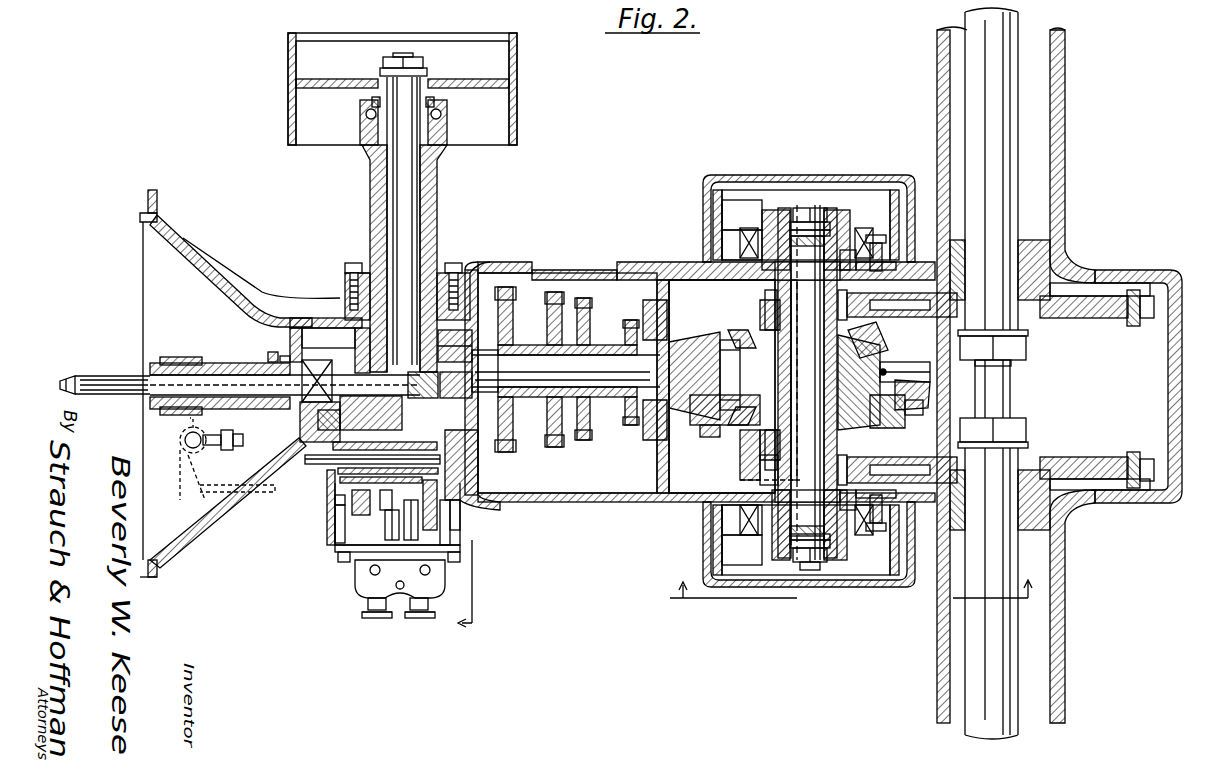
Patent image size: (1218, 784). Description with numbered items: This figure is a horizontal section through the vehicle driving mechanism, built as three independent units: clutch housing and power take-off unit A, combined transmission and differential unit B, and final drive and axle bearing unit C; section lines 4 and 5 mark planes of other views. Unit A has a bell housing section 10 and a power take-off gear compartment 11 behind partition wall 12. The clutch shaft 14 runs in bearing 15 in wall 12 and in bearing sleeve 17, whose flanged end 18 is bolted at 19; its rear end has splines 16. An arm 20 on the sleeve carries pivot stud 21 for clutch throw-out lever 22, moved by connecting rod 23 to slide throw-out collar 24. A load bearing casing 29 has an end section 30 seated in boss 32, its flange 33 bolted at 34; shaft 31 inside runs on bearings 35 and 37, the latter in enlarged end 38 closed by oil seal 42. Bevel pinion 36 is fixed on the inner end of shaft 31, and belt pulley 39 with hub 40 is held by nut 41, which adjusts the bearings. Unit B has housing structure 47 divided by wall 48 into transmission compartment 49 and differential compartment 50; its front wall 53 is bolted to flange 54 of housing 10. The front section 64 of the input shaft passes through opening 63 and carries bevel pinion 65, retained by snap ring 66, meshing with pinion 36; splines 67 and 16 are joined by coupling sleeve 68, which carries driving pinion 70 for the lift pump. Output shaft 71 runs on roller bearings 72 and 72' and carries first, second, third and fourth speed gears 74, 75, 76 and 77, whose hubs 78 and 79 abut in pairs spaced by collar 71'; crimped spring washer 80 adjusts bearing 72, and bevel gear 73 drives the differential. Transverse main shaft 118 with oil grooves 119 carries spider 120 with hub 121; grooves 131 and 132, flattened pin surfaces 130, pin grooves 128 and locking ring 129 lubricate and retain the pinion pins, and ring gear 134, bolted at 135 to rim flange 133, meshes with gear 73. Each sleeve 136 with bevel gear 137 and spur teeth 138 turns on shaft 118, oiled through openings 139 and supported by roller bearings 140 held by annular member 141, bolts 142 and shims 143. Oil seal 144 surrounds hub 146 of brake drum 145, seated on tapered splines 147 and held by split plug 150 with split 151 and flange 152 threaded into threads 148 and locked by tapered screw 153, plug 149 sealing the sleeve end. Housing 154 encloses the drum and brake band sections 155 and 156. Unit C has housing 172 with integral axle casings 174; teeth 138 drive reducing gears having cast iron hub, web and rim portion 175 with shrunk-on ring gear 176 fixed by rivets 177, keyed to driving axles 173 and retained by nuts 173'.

The clutch housing and power take-off unit A is at (248, 284).
The combined transmission and differential unit B is at (652, 255).
The final drive or speed reduction and axle bearing unit C is at (1084, 268).
The section line 4 is at (848, 598).
The section line 5 / control shaft 5 is at (407, 252).
The bell housing section 10 is at (165, 522).
The rear power take-off gear compartment 11 is at (310, 328).
The vertical partition wall 12 is at (290, 334).
The driven clutch shaft 14 is at (155, 386).
The anti-friction bearing 15 is at (300, 412).
The splines 16 is at (325, 380).
The bearing sleeve 17 is at (226, 364).
The flanged end 18 is at (333, 447).
The bolts 19 is at (268, 358).
The arm 20 is at (238, 446).
The pivot stud 21 is at (185, 447).
The clutch throw-out lever 22 is at (182, 502).
The connecting rod 23 is at (238, 493).
The clutch throw-out collar 24 is at (185, 358).
The load bearing casing 29 is at (437, 185).
The large diameter end section 30 is at (345, 280).
The power take-off shaft 31 is at (398, 190).
The boss 32 is at (468, 266).
The flange 33 is at (368, 273).
The bolts 34 is at (348, 263).
The anti-friction roller bearing 35 is at (352, 344).
The bevel pinion 36 is at (378, 362).
The anti-friction bearing 37 is at (447, 118).
The enlarged outer end 38 is at (360, 115).
The belt driving pulley 39 is at (518, 80).
The hub portion 40 is at (420, 80).
The nut 41 is at (415, 58).
The oil seal 42 is at (376, 97).
The housing structure 47 is at (608, 503).
The vertical wall 48 is at (672, 458).
The transmission gearing compartment 49 is at (640, 262).
The differential gearing compartment 50 is at (672, 502).
The front end wall 53 is at (490, 468).
The rear end wall flange 54 is at (478, 496).
The opening 63 is at (455, 346).
The front end section 64 is at (371, 413).
The bevel driving pinion 65 is at (456, 385).
The snap ring 66 is at (423, 385).
The splines 67 is at (327, 420).
The coupling sleeve 68 is at (292, 383).
The driving pinion 70 is at (318, 464).
The power output shaft 71 is at (595, 369).
The spacing collar 71' is at (581, 315).
The anti-friction roller bearing 72 is at (715, 359).
The anti-friction roller bearing 72' is at (517, 316).
The bevel gear 73 is at (712, 340).
The first speed gear 74 is at (513, 440).
The second speed gear 75 is at (558, 447).
The third speed gear 76 is at (588, 440).
The fourth speed gear 77 is at (632, 426).
The hub portions 78 is at (530, 350).
The hub portions 79 is at (600, 345).
The crimped spring washer 80 is at (566, 371).
The main shaft 118 is at (760, 455).
The oil distributing grooves 119 is at (760, 475).
The spider 120 is at (870, 356).
The hub portion 121 is at (814, 382).
The groove 128 is at (905, 362).
The locking ring 129 is at (912, 386).
The flattened surfaces 130 is at (745, 377).
The grooves 131 is at (868, 340).
The grooves 132 is at (720, 426).
The annular flange 133 is at (895, 425).
The ring gear 134 is at (918, 415).
The bolts 135 is at (706, 432).
The sleeve 136 is at (870, 262).
The bevel gear 137 is at (872, 430).
The spur gear teeth 138 is at (765, 305).
The radial openings 139 is at (804, 379).
The roller bearings 140 is at (722, 250).
The annular member 141 is at (730, 240).
The bolts 142 is at (876, 235).
The bearing adjusting shims 143 is at (770, 212).
The annular oil seal 144 is at (782, 208).
The brake drum 145 is at (717, 195).
The hub 146 is at (815, 210).
The tapered splines 147 is at (862, 228).
The internal threads 148 is at (846, 250).
The plug 149 is at (807, 386).
The metal plug 150 is at (810, 208).
The split 151 is at (800, 222).
The flange 152 is at (800, 230).
The tapered locking screw 153 is at (812, 570).
The housing 154 is at (703, 200).
The metal brake band section 155 is at (948, 545).
The metal brake band section 156 is at (705, 575).
The housing 172 is at (1140, 270).
The driving axles 173 is at (1039, 373).
The nuts 173' is at (1010, 389).
The casings 174 is at (1066, 97).
The hub, web and rim portion 175 is at (1085, 318).
The hardened ring gear 176 is at (1133, 326).
The rivets 177 is at (1135, 320).